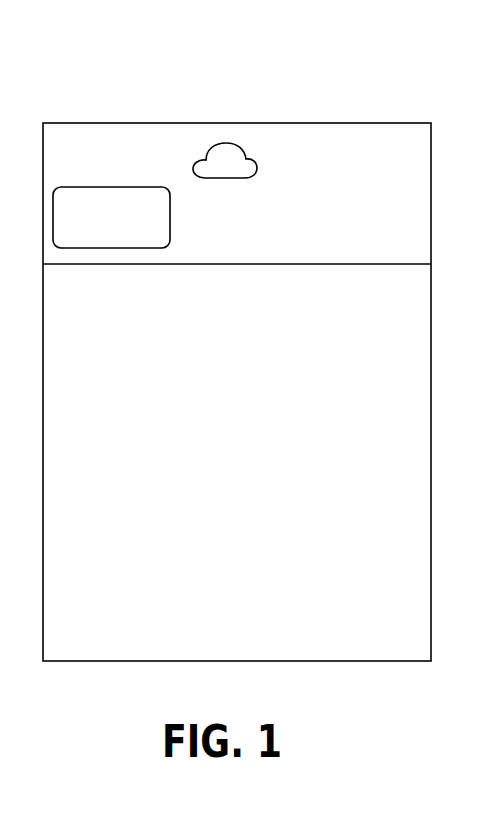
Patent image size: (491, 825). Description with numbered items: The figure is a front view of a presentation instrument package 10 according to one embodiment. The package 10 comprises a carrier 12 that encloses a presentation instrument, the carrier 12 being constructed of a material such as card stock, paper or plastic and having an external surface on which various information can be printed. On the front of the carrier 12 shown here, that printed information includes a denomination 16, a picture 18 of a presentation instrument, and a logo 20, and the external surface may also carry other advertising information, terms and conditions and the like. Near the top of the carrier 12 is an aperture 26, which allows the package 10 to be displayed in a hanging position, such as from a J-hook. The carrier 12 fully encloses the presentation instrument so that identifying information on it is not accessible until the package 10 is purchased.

The presentation instrument package 10 is at (278, 98).
The carrier 12 is at (428, 180).
The denomination 16 is at (372, 135).
The picture of a presentation instrument 18 is at (98, 187).
The logo 20 is at (377, 648).
The aperture 26 is at (220, 150).